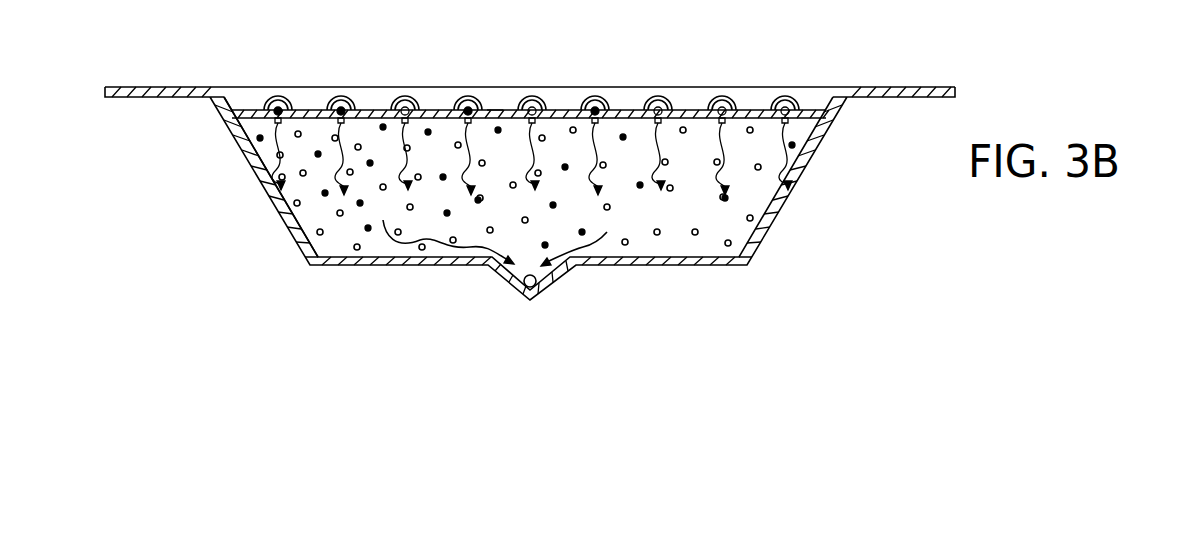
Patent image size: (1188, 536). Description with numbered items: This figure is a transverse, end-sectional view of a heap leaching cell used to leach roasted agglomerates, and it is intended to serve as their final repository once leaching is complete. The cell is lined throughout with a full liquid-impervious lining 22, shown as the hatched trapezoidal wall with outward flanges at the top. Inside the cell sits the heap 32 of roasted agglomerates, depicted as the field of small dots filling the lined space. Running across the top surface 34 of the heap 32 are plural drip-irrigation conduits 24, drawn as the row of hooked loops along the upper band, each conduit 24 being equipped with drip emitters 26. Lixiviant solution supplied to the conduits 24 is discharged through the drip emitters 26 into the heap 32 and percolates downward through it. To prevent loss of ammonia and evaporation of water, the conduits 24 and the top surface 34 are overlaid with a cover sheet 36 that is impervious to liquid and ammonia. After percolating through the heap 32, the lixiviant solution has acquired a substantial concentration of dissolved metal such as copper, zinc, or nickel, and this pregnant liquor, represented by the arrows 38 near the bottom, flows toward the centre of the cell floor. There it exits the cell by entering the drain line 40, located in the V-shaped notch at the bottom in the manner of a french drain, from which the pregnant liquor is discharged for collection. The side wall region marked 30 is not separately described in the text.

The liquid-impervious lining 22 is at (818, 142).
The drip-irrigation conduits 24 is at (341, 101).
The drip emitters 26 is at (503, 114).
The side wall 30 is at (270, 165).
The heap 32 is at (760, 140).
The top surface of the heap 34 is at (684, 111).
The cover sheet 36 is at (377, 110).
The arrows indicating pregnant liquor 38 is at (470, 258).
The drain line 40 is at (538, 288).